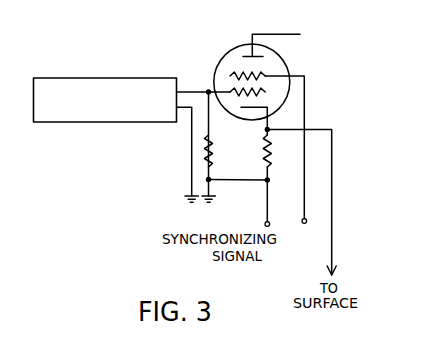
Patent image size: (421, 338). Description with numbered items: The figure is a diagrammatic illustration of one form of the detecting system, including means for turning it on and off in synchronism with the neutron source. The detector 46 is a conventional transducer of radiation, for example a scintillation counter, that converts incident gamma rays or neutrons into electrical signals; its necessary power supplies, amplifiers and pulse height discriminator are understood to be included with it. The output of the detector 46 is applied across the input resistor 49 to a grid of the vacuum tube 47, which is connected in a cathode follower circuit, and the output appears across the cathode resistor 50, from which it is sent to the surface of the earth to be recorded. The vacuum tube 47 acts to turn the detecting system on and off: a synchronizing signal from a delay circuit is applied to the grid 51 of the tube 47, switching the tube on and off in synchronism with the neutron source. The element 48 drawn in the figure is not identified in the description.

The detector 46 is at (90, 77).
The vacuum tube 47 is at (239, 48).
The control grid 48 is at (233, 72).
The input resistor 49 is at (212, 140).
The cathode resistor 50 is at (264, 154).
The grid 51 is at (266, 74).